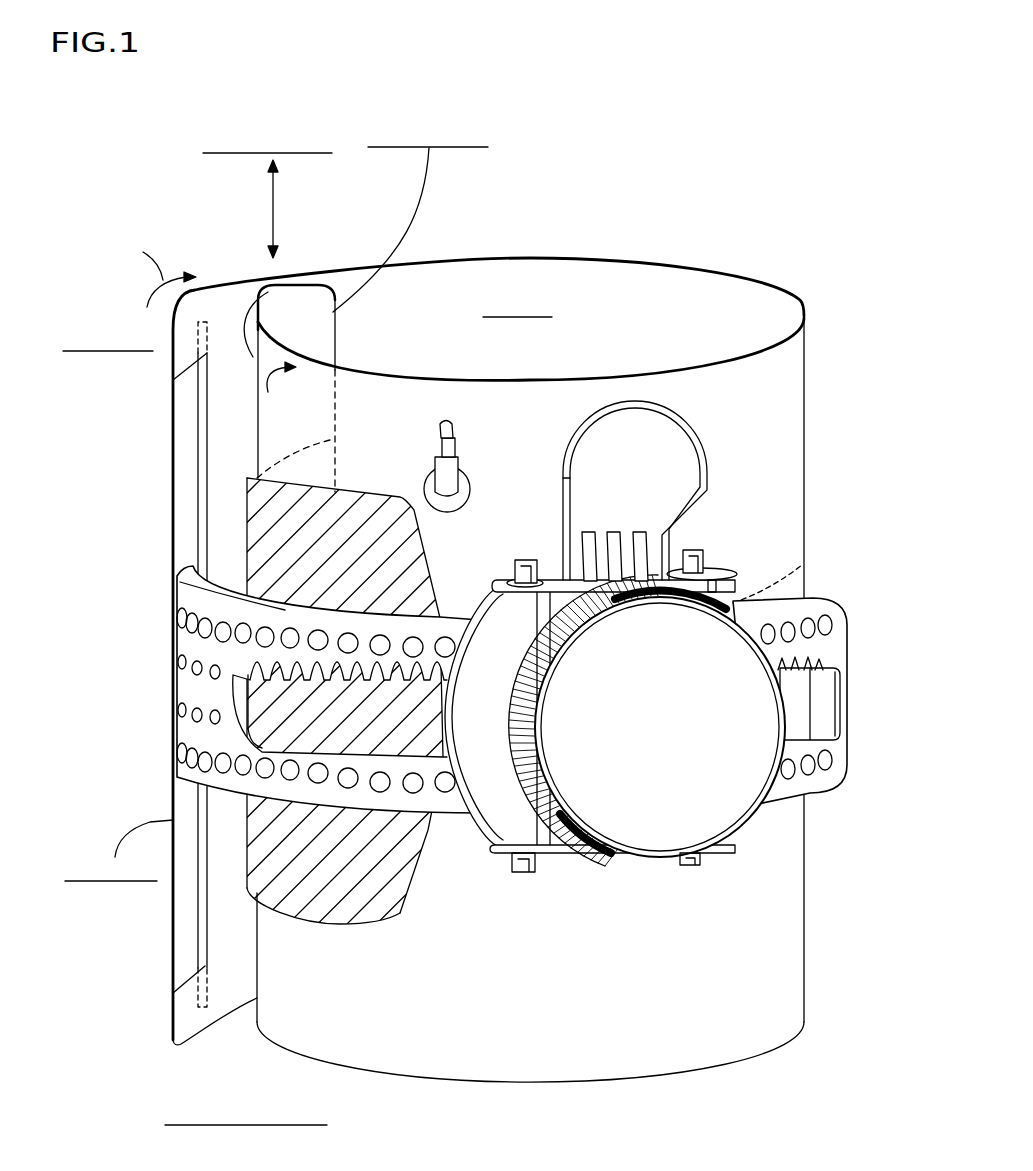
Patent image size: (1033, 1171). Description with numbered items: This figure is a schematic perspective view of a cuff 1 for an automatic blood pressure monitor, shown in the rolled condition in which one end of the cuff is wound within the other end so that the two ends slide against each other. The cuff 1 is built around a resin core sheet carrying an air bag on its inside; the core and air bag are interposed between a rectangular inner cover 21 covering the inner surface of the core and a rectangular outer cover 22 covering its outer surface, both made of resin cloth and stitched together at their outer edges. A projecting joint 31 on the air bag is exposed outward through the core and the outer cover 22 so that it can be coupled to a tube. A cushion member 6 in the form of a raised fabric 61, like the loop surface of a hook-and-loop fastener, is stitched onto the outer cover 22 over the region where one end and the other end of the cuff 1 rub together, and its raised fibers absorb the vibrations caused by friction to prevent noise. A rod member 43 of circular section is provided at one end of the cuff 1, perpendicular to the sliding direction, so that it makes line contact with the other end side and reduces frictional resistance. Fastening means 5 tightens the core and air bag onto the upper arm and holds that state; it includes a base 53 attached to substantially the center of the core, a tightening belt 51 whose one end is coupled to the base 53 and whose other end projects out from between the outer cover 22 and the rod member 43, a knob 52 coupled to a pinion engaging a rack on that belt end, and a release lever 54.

The cuff 1 is at (544, 148).
The inner cover 21 is at (295, 317).
The outer cover 22 is at (710, 380).
The joint 31 is at (466, 415).
The rod member 43 is at (205, 393).
The fastening means 5 is at (615, 665).
The tightening belt 51 is at (445, 800).
The knob 52 is at (655, 822).
The base 53 is at (500, 582).
The release lever 54 is at (635, 457).
The cushion member 6 is at (276, 585).
The raised fabric 61 is at (313, 897).